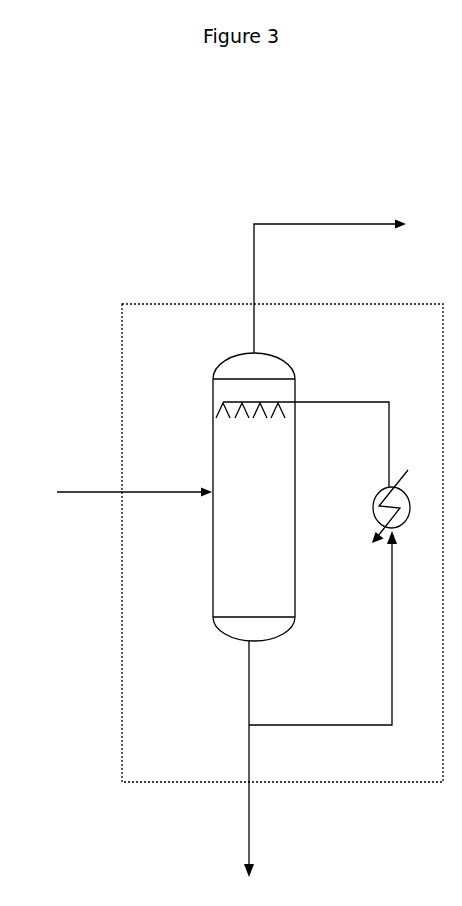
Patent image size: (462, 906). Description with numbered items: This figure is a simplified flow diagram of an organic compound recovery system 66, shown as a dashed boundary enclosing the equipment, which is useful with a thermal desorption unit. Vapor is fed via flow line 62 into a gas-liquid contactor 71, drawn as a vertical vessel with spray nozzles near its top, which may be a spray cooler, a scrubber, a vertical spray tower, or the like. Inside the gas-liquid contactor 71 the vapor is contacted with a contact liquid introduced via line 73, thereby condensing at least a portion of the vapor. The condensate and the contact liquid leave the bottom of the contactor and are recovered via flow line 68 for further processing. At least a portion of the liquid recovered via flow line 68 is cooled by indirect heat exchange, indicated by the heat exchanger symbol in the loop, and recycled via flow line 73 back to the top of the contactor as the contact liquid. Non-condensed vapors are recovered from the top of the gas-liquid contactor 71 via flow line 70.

The organic compound recovery system 66 is at (152, 300).
The flow line 70 is at (326, 227).
The gas-liquid contactor 71 is at (254, 497).
The flow line 73 is at (338, 407).
The flow line 62 is at (83, 499).
The flow line 68 is at (248, 820).